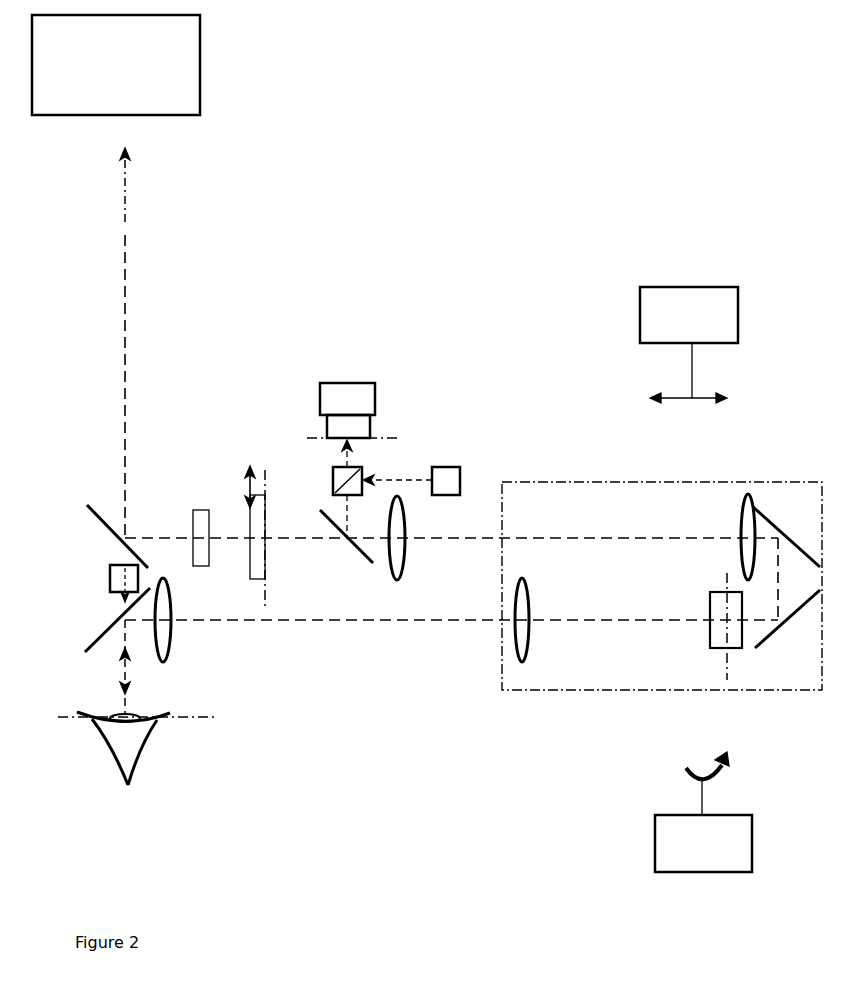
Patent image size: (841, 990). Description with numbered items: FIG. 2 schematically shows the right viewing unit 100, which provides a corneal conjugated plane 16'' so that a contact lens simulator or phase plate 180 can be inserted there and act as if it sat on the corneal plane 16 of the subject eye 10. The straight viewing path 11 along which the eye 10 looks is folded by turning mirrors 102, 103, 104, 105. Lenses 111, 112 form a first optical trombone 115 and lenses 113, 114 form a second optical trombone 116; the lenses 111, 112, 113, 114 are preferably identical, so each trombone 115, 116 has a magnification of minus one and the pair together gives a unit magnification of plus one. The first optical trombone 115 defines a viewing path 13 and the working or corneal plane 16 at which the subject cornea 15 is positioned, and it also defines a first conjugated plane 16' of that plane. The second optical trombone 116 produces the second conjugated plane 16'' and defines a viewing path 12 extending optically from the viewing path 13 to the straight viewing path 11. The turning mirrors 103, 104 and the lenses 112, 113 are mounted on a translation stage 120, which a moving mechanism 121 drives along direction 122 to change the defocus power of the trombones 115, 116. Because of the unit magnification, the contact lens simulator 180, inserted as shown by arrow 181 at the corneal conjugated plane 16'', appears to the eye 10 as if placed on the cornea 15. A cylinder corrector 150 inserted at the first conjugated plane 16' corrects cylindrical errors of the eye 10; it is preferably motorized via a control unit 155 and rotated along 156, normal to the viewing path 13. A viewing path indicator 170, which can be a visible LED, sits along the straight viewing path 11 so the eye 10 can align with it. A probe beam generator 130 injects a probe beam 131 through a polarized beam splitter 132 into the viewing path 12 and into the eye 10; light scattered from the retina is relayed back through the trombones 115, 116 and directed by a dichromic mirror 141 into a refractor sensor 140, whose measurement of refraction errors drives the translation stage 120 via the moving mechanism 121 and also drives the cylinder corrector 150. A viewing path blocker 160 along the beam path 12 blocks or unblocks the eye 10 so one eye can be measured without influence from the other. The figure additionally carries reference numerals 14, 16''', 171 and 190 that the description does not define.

The subject eye 10 is at (130, 765).
The straight viewing path 11 is at (122, 270).
The viewing path 12 is at (426, 477).
The viewing path 13 is at (272, 623).
The eye illumination beam 14 is at (120, 655).
The subject cornea 15 is at (120, 712).
The corneal plane 16 is at (149, 741).
The first conjugated plane 16' is at (698, 651).
The second conjugated plane 16'' is at (292, 538).
The optical axis of camera 16''' is at (371, 406).
The right viewing unit 100 is at (686, 140).
The turning mirror 102 is at (105, 628).
The turning mirror 103 is at (770, 640).
The turning mirror 104 is at (767, 510).
The turning mirror 105 is at (88, 517).
The lens 111 is at (173, 643).
The lens 112 is at (523, 657).
The lens 113 is at (747, 497).
The lens 114 is at (403, 552).
The first optical trombone 115 is at (398, 678).
The second optical trombone 116 is at (619, 466).
The translation stage 120 is at (677, 480).
The moving mechanism 121 is at (732, 297).
The direction 122 is at (725, 400).
The probe beam generator 130 is at (458, 465).
The probe beam 131 is at (390, 473).
The polarized beam splitter 132 is at (333, 478).
The refractor sensor 140 is at (375, 387).
The dichromic mirror 141 is at (355, 550).
The cylinder corrector 150 is at (740, 648).
The control unit 155 is at (748, 843).
The rotation 156 is at (697, 780).
The viewing path blocker 160 is at (198, 510).
The viewing path indicator 170 is at (110, 587).
The fixation beam 171 is at (122, 598).
The contact lens simulator or phase plate 180 is at (253, 553).
The arrow 181 is at (243, 482).
The interferometer unit 190 is at (200, 114).